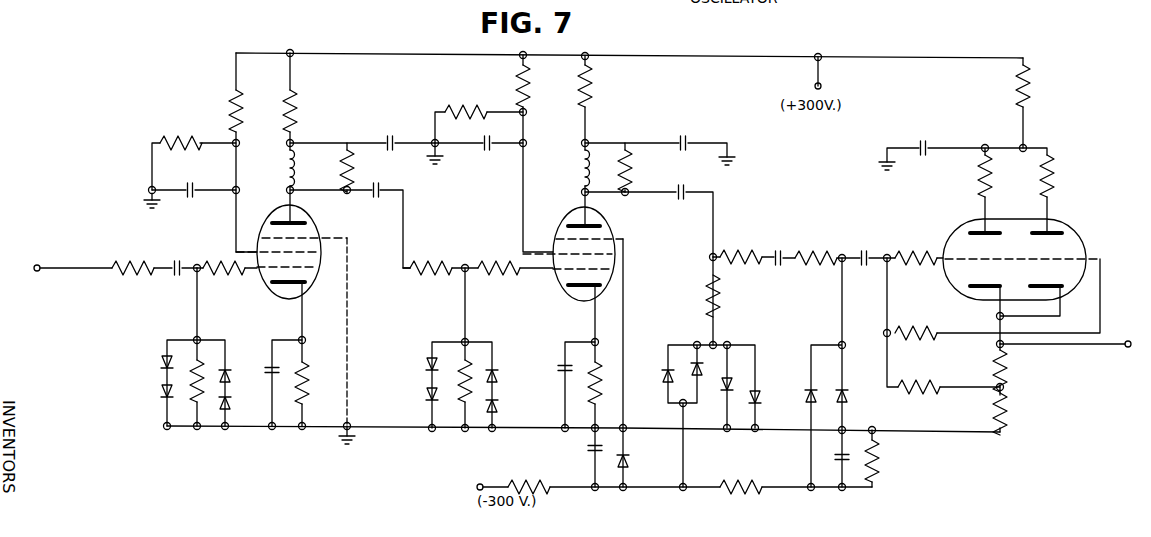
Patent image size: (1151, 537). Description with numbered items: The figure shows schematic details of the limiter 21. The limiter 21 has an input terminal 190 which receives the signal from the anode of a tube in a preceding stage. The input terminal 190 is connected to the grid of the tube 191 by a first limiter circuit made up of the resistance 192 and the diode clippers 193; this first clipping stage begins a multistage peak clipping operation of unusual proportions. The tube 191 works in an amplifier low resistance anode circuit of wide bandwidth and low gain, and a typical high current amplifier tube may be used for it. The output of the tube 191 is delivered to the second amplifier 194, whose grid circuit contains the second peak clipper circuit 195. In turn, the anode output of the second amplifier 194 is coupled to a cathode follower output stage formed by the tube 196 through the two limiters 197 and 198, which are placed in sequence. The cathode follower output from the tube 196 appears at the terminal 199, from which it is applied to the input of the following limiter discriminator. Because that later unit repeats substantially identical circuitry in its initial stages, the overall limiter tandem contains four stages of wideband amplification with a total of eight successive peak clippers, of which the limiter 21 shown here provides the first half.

The input terminal 190 is at (47, 284).
The tube 191 is at (270, 291).
The resistance 192 is at (135, 276).
The diode clippers 193 is at (212, 453).
The second amplifier 194 is at (560, 296).
The second peak clipper circuit 195 is at (482, 451).
The cathode follower output stage tube 196 is at (1062, 224).
The limiter 197 is at (760, 337).
The limiter 198 is at (827, 337).
The terminal 199 is at (1125, 341).
The limiter 21 is at (442, 501).